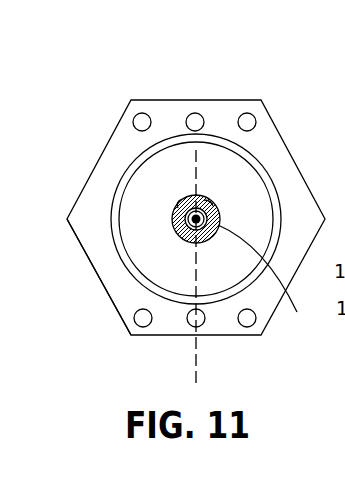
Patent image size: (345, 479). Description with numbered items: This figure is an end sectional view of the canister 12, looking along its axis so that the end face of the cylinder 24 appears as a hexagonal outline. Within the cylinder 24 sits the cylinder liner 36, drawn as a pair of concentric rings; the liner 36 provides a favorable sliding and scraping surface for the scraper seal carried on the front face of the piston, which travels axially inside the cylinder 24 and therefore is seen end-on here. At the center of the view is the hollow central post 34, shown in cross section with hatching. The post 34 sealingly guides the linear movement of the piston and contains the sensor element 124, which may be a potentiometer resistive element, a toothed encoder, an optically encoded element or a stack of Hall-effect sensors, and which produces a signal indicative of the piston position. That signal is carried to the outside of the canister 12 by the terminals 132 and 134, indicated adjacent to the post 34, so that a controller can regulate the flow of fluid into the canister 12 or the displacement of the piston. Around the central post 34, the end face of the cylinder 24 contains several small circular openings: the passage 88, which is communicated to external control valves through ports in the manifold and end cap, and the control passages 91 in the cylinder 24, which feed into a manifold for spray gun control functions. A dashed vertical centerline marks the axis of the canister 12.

The canister 12 is at (272, 108).
The cylinder 24 is at (100, 280).
The central post 34 is at (172, 224).
The cylinder liner 36 is at (184, 199).
The passage 88 is at (192, 118).
The control passages 91 is at (246, 113).
The sensor element 124 is at (182, 200).
The terminal 132 is at (176, 210).
The terminal 134 is at (268, 281).